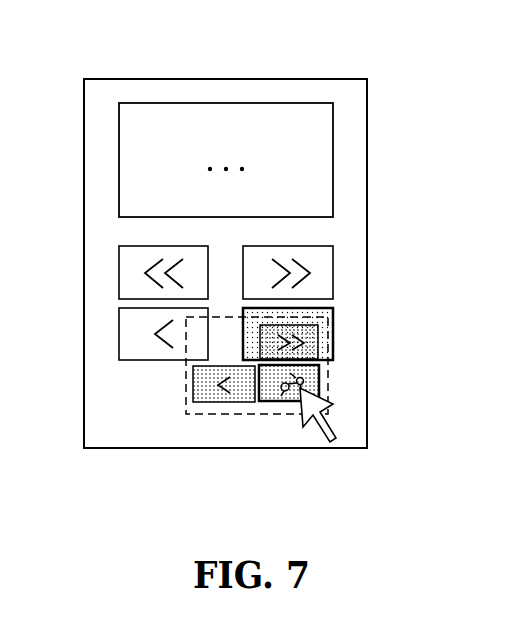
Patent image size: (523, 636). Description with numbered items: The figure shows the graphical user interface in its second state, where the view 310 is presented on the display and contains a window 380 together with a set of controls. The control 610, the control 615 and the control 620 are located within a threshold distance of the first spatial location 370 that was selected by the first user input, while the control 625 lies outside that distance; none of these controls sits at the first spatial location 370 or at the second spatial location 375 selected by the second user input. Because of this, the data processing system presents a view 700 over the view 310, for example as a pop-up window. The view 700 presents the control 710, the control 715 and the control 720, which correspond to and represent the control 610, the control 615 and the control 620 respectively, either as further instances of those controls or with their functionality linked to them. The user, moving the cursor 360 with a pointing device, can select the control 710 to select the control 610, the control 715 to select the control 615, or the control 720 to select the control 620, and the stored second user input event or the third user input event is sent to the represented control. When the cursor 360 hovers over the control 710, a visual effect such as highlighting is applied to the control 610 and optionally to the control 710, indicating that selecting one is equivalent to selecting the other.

The view 310 is at (310, 79).
The window 380 is at (353, 147).
The control 625 is at (133, 268).
The control 620 is at (323, 260).
The control 615 is at (133, 333).
The control 610 is at (328, 316).
The control 720 is at (308, 343).
The view 700 is at (186, 383).
The control 715 is at (208, 389).
The first spatial location 370 is at (285, 387).
The second spatial location 375 is at (293, 390).
The control 710 is at (312, 379).
The cursor 360 is at (313, 415).